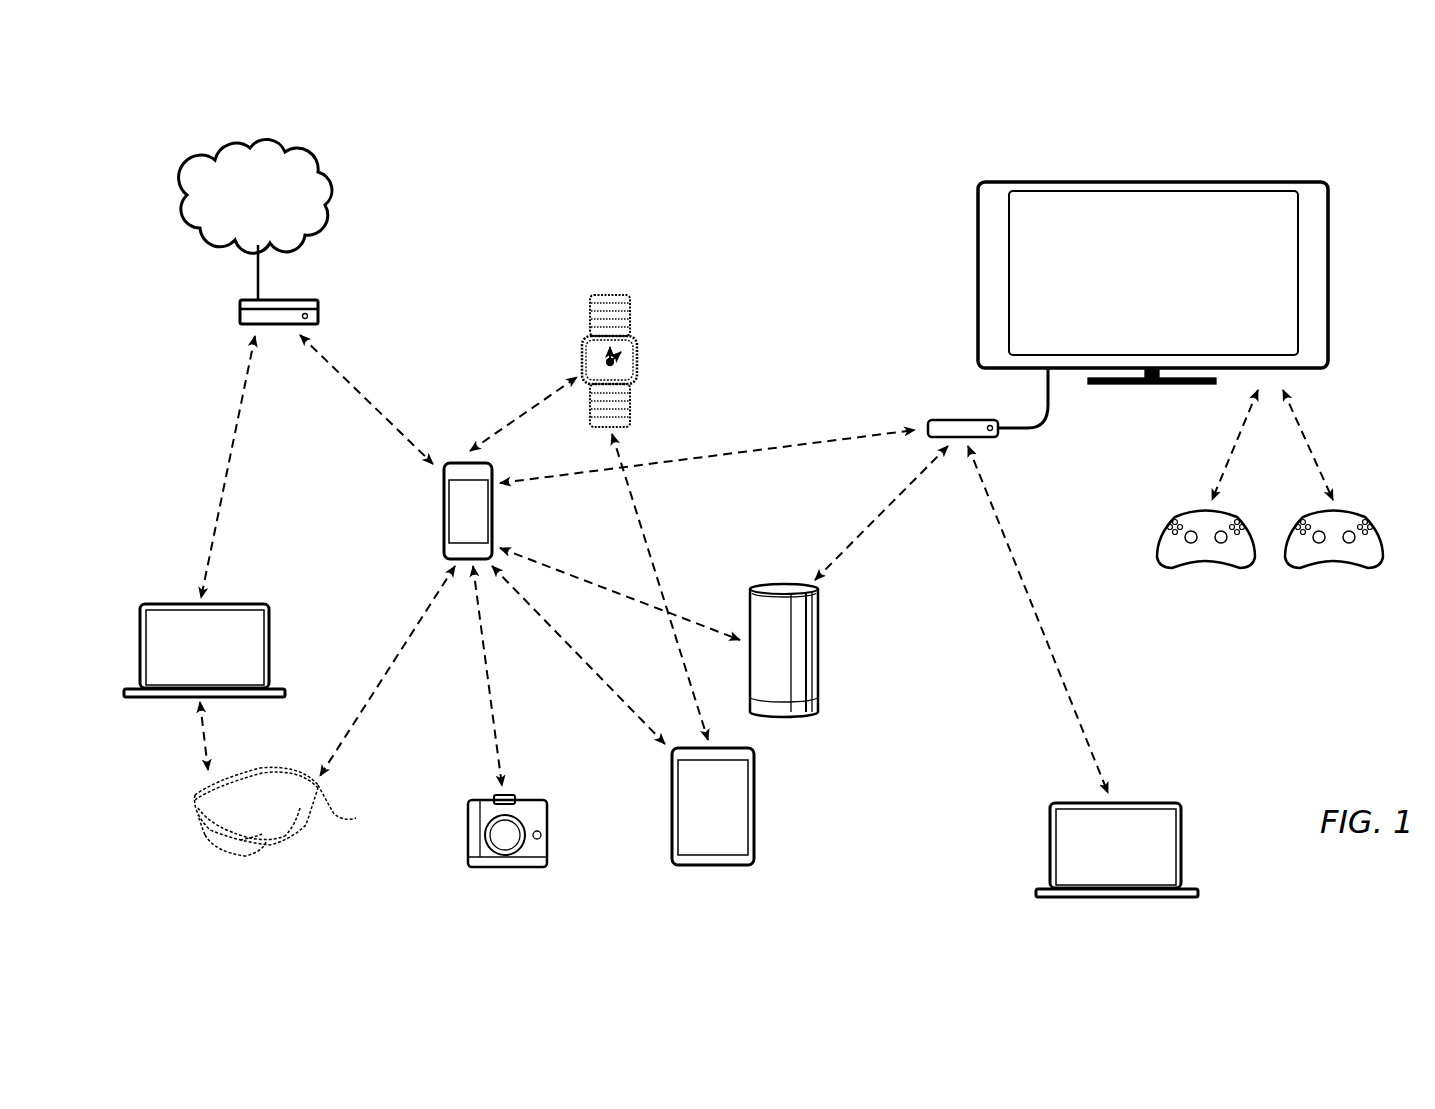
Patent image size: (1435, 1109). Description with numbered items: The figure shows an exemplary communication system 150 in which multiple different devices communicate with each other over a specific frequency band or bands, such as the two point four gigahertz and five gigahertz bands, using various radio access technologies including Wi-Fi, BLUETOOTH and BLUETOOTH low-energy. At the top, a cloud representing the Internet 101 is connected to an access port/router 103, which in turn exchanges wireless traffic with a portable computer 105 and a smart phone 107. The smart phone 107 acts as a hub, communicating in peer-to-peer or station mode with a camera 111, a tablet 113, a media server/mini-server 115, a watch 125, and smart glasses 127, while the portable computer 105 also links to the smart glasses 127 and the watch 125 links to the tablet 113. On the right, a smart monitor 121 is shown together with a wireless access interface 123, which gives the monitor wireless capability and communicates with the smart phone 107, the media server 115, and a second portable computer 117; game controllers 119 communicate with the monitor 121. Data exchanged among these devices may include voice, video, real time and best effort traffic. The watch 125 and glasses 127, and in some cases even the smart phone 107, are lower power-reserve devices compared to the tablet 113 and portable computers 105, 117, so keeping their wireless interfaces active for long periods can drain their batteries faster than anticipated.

The Internet 101 is at (330, 200).
The access port/router 103 is at (318, 305).
The portable computer 105 is at (269, 635).
The smart phone 107 is at (444, 517).
The camera 111 is at (468, 832).
The tablet 113 is at (672, 808).
The media server/mini-server 115 is at (818, 658).
The portable computer 117 is at (1050, 847).
The game controller 119 is at (1156, 548).
The smart monitor 121 is at (978, 265).
The wireless access interface 123 is at (952, 420).
The watch 125 is at (640, 358).
The smart glasses 127 is at (212, 852).
The system 150 is at (1362, 114).